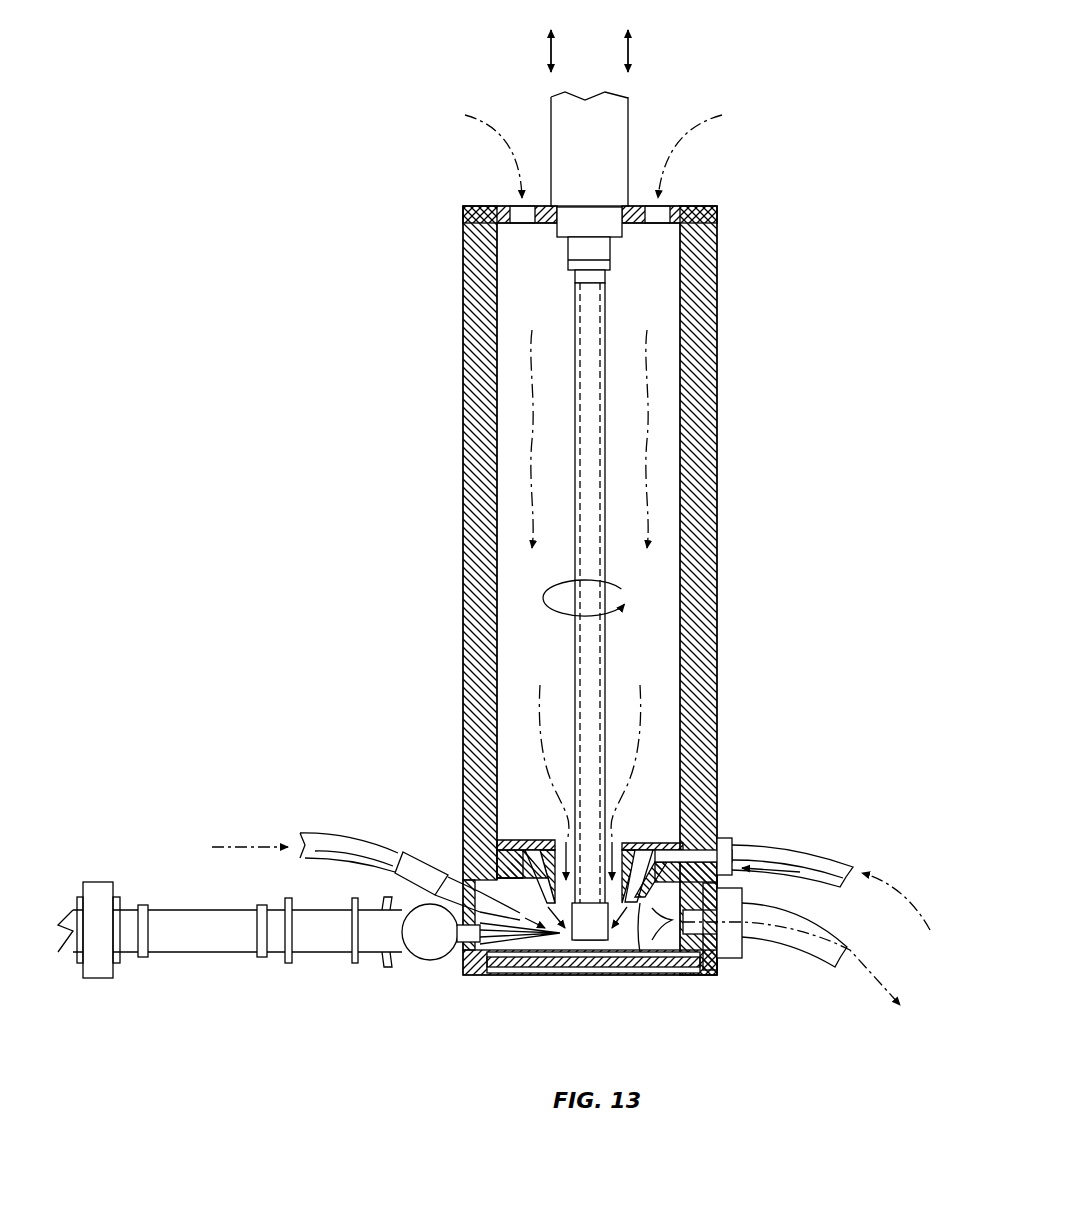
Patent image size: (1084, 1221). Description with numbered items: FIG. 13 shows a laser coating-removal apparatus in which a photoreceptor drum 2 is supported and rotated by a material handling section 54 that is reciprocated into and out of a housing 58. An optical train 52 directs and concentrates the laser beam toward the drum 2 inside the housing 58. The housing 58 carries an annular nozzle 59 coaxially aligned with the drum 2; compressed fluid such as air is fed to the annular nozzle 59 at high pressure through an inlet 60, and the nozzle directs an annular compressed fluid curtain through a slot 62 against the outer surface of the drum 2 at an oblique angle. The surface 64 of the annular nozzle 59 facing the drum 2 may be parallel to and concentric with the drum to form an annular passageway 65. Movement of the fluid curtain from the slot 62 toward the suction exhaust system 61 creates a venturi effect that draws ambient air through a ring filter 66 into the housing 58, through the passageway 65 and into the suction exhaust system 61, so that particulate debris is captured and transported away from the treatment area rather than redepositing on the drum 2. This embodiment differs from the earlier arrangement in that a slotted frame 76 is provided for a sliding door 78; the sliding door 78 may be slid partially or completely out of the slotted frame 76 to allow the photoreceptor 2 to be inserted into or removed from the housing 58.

The photoreceptor drum 2 is at (575, 648).
The optical train 52 is at (200, 952).
The material handling section 54 is at (589, 118).
The housing 58 is at (717, 520).
The annular nozzle 59 is at (660, 840).
The inlet 60 is at (805, 852).
The suction exhaust system 61 is at (795, 940).
The slot 62 is at (580, 975).
The surface of annular nozzle 64 is at (640, 975).
The annular passageway 65 is at (610, 842).
The ring filter 66 is at (595, 144).
The slotted frame 76 is at (487, 975).
The sliding door 78 is at (543, 975).